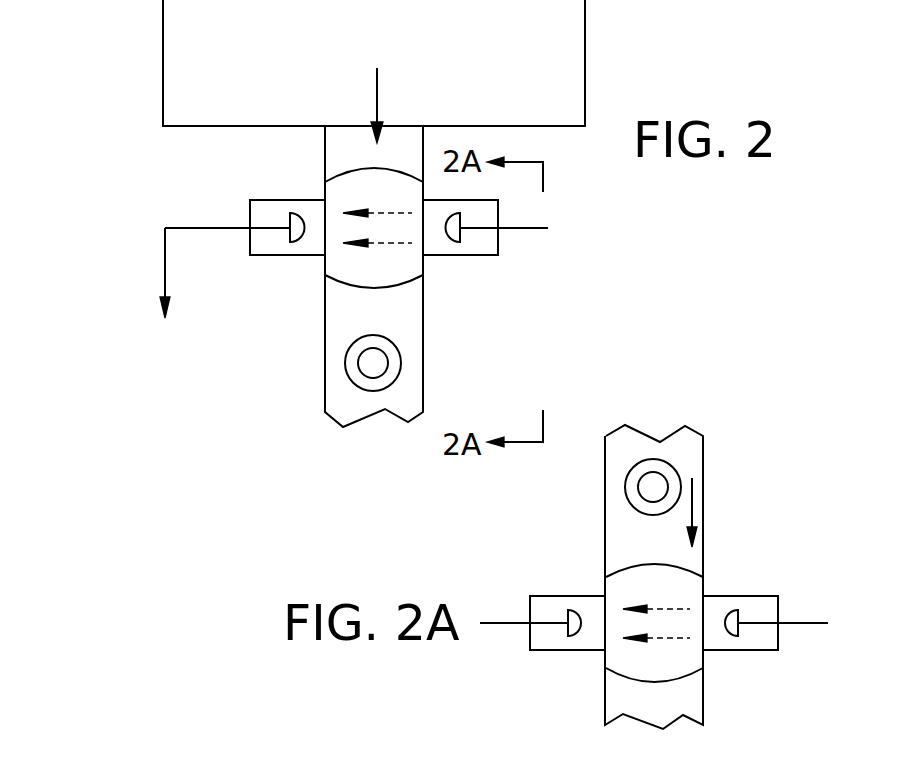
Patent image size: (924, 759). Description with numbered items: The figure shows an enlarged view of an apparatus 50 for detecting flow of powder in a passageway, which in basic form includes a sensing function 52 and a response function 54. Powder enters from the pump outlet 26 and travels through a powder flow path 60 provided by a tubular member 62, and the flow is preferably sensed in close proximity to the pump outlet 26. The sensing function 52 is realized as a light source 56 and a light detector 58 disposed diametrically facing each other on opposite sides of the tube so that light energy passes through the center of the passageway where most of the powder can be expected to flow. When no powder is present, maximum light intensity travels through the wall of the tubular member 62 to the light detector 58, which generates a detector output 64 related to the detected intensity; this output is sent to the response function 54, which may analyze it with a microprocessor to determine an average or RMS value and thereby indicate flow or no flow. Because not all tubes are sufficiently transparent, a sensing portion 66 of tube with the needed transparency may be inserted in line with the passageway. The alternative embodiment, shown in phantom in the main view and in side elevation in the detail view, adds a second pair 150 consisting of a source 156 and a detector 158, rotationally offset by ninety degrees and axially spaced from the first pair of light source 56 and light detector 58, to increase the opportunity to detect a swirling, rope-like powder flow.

In FIG. 2, the pump outlet 26 is at (338, 110).
In FIG. 2, the apparatus 50 is at (278, 436).
In FIG. 2, the sensing function 52 is at (47, 237).
In FIG. 2A, the sensing function 52 is at (595, 490).
In FIG. 2, the response function 54 is at (240, 758).
In FIG. 2, the light source 56 is at (540, 229).
In FIG. 2A, the light source 56 is at (672, 463).
In FIG. 2, the light detector 58 is at (297, 213).
In FIG. 2, the powder flow path 60 is at (371, 277).
In FIG. 2A, the powder flow path 60 is at (700, 503).
In FIG. 2, the tubular member 62 is at (436, 289).
In FIG. 2, the detector output 64 is at (165, 265).
In FIG. 2, the sensing portion 66 is at (325, 263).
In FIG. 2A, the second pair 150 is at (730, 570).
In FIG. 2, the source 156 is at (402, 363).
In FIG. 2A, the source 156 is at (730, 637).
In FIG. 2A, the detector 158 is at (578, 637).